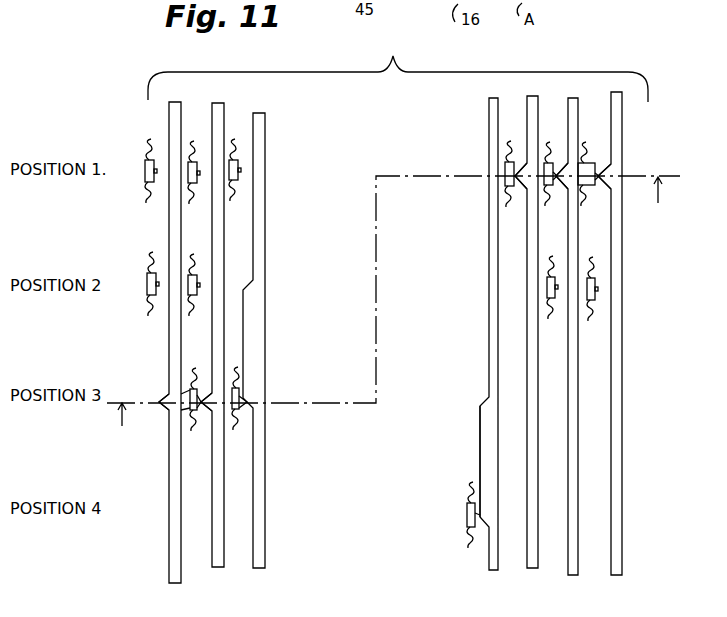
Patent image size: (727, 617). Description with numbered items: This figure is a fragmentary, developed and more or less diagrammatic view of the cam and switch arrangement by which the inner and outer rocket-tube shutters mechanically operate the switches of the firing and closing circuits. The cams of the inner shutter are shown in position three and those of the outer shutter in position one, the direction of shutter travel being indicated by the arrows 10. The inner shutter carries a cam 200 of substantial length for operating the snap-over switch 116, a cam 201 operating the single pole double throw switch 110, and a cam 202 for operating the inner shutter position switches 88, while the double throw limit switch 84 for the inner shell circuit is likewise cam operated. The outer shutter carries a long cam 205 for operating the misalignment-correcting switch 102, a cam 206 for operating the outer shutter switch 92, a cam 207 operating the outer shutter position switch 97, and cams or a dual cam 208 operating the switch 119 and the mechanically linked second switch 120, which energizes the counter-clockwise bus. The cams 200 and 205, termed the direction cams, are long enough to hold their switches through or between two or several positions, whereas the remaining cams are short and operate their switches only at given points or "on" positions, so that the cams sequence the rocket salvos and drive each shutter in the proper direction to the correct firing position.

The direction of movement arrow 10 is at (392, 304).
The double throw limit switch 84 is at (193, 272).
The single pole single throw limit switch 88 is at (130, 301).
The outer shutter single pole double throw switch 92 is at (547, 289).
The outer shutter position switch 97 is at (556, 188).
The shutter misalignment-correcting single pole double throw switch 102 is at (467, 513).
The single pole double throw switch 110 is at (195, 386).
The snap-over switch 116 is at (240, 396).
The single pole single throw switch 119 is at (590, 170).
The second switch 120 is at (581, 160).
The cam 200 is at (244, 327).
The cam 201 is at (205, 413).
The cam 202 is at (166, 410).
The long cam 205 is at (482, 466).
The cam 206 is at (520, 164).
The cam 207 is at (561, 165).
The dual cam 208 is at (605, 186).